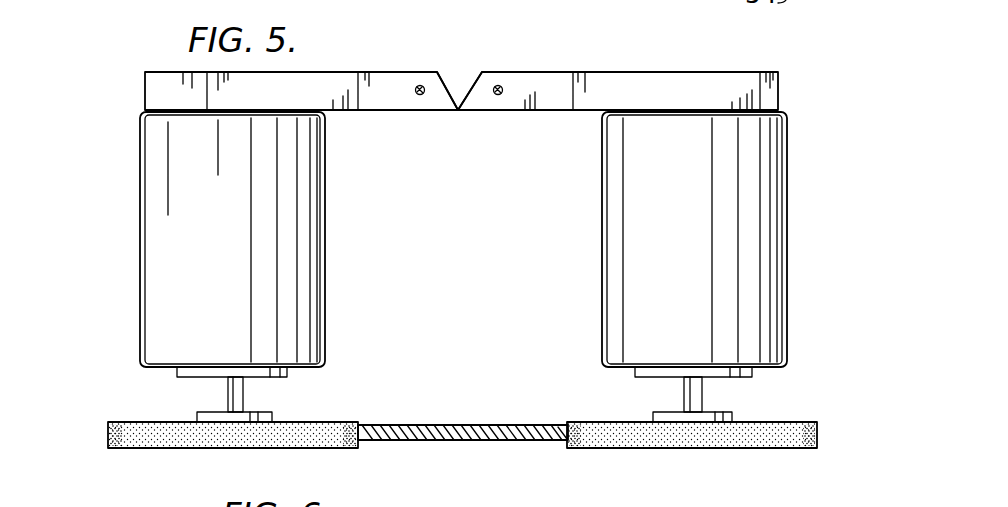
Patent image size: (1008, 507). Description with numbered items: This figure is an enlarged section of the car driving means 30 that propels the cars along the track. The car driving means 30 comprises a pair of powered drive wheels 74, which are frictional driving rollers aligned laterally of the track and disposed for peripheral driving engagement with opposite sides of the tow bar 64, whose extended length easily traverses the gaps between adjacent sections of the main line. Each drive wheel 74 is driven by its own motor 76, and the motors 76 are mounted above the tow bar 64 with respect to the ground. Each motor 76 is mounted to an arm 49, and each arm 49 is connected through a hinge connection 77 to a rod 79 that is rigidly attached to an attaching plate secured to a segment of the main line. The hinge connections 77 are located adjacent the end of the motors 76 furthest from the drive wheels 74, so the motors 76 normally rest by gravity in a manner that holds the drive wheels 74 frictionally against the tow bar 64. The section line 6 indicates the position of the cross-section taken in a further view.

The car driving means 30 is at (790, 158).
The arm 49 is at (358, 110).
The tow bar 64 is at (462, 425).
The drive wheels 74 is at (190, 448).
The motor 76 is at (325, 259).
The hinge connection 77 is at (432, 91).
The rod 79 is at (422, 87).
The section line 6- 6 is at (115, 392).